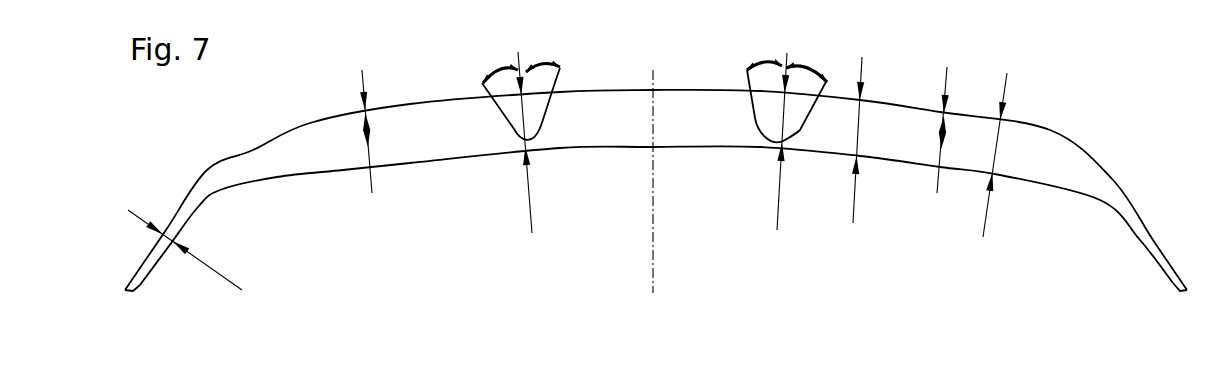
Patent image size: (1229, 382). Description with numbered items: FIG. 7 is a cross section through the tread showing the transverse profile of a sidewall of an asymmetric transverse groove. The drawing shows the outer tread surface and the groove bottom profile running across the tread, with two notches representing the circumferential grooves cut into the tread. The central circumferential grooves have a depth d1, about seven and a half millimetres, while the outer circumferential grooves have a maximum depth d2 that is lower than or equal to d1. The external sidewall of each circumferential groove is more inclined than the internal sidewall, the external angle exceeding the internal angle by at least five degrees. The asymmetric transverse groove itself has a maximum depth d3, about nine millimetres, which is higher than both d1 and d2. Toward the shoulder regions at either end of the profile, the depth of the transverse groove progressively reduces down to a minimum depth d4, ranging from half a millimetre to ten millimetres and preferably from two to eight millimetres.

The depth of the circumferential grooves 12 and 13 d1 is at (652, 150).
The maximum depth of the circumferential grooves 11 and 14 d2 is at (654, 140).
The maximum depth of the asymmetric transverse grooves d3 is at (920, 159).
The minimum depth of the asymmetric transverse grooves d4 is at (185, 250).